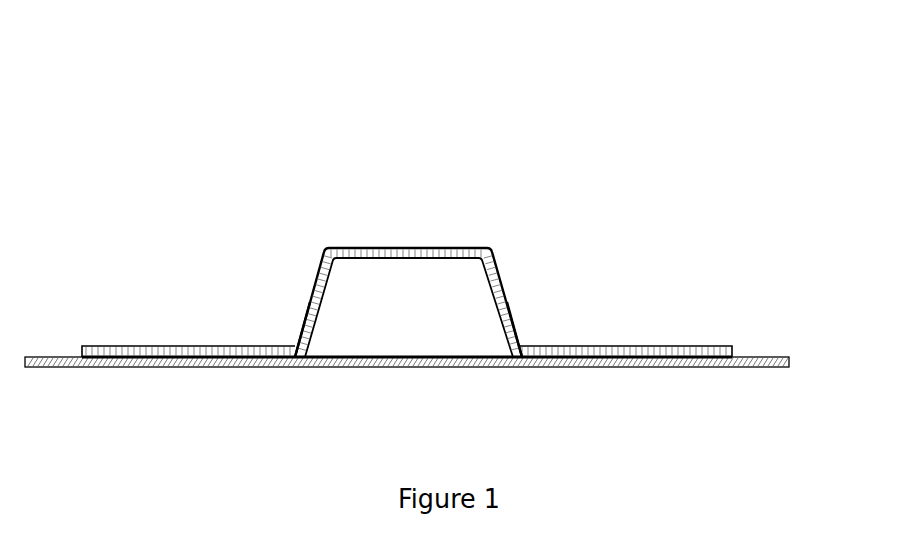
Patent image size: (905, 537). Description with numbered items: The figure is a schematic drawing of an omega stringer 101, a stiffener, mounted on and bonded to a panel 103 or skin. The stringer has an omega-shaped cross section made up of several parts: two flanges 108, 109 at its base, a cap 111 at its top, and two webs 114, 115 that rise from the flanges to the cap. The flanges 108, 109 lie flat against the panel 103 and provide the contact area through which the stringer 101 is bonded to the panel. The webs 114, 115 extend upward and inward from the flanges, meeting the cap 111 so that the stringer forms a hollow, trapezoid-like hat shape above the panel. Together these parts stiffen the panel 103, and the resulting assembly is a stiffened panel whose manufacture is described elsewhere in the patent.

The omega stringer 101 is at (452, 203).
The panel 103 is at (778, 357).
The flange 108 is at (102, 345).
The flange 109 is at (645, 347).
The cap 111 is at (412, 248).
The web 114 is at (297, 345).
The web 115 is at (508, 298).